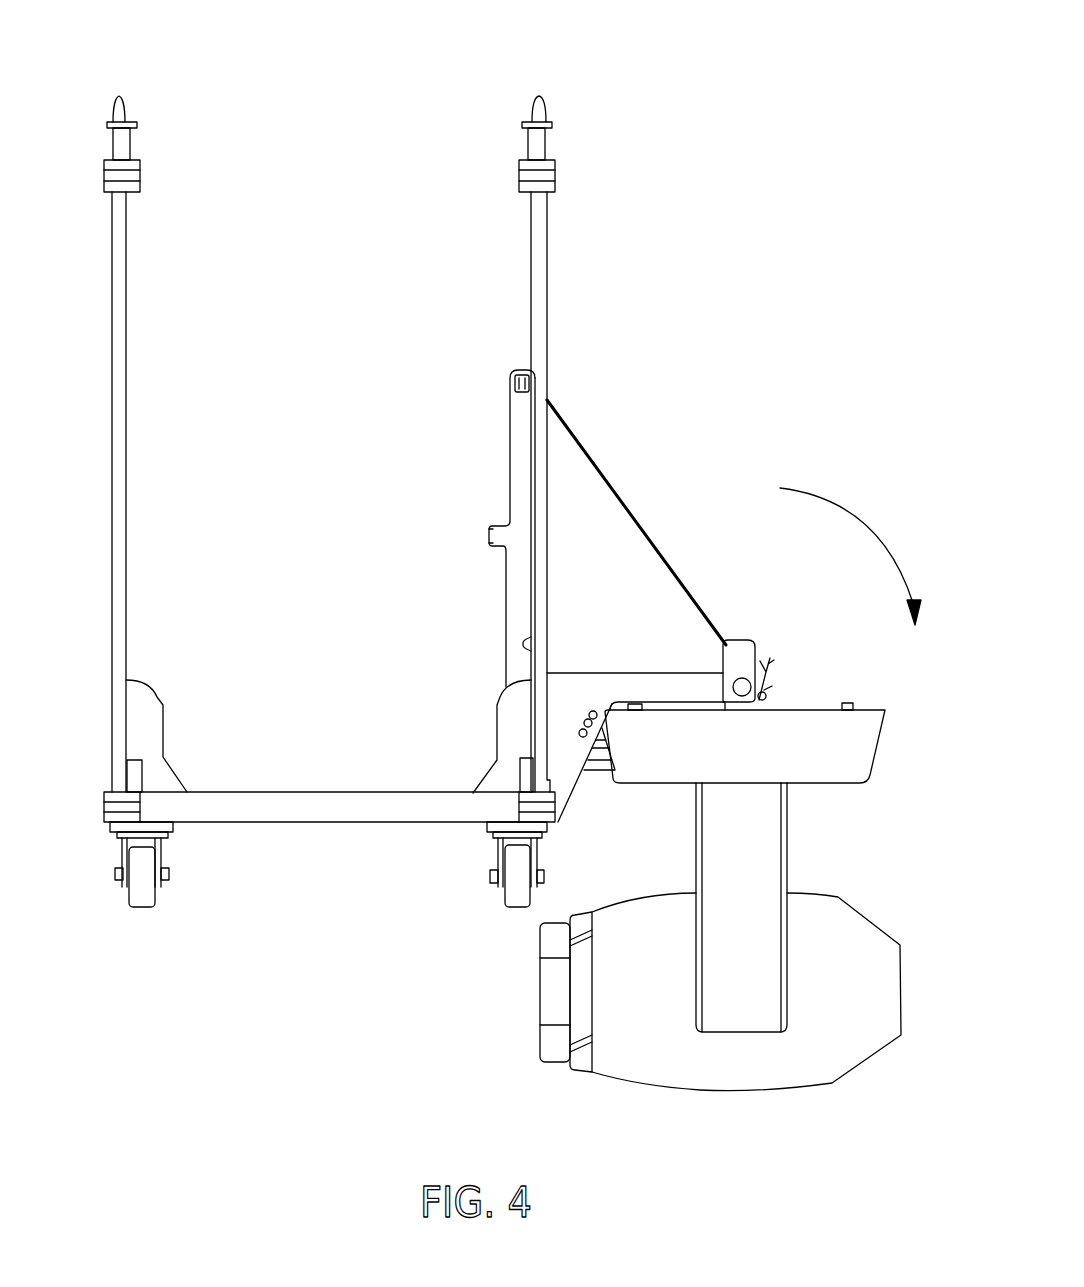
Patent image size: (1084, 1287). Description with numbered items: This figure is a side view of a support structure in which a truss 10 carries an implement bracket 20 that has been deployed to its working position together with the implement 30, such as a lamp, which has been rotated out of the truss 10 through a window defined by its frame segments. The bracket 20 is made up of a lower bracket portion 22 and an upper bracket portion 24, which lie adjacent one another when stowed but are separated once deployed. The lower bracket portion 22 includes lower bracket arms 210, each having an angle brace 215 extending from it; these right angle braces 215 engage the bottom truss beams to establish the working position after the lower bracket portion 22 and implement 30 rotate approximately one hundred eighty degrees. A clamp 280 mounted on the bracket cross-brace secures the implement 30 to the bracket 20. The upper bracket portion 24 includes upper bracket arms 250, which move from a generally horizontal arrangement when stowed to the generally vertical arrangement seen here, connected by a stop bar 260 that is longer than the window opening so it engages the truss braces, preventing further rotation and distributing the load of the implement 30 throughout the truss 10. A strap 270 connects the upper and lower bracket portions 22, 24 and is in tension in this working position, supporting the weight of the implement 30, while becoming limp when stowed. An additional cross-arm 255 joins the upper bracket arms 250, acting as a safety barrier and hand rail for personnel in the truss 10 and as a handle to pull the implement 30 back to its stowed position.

The truss 10 is at (645, 86).
The implement bracket 20 is at (470, 698).
The lower bracket portion 22 is at (638, 673).
The upper bracket portion 24 is at (505, 668).
The implement 30 is at (807, 1070).
The lower bracket arm 210 is at (582, 695).
The angle brace 215 is at (559, 808).
The upper bracket arm 250 is at (512, 440).
The cross-arm 255 is at (490, 535).
The stop bar 260 is at (522, 380).
The strap 270 is at (612, 485).
The clamp 280 is at (757, 707).